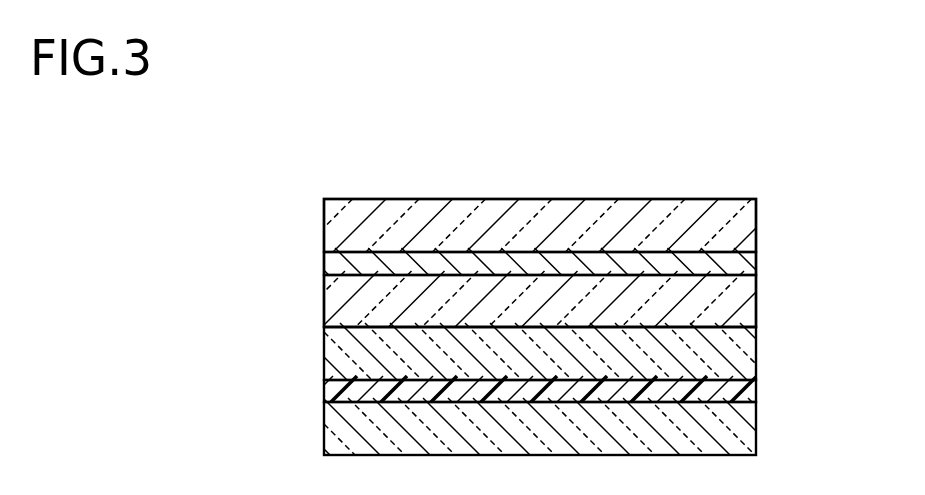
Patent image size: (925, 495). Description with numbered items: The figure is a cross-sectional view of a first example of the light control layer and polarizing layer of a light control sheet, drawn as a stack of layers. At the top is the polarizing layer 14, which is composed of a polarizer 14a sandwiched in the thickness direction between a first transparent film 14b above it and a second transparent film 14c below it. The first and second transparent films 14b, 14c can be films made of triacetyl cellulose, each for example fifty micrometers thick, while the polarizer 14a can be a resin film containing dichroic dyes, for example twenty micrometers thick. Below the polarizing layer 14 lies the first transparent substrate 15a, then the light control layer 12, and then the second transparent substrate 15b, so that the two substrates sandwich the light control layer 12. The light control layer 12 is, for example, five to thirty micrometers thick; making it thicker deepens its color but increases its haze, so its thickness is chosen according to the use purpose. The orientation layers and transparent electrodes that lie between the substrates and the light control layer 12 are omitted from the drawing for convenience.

The polarizing layer 14 is at (833, 200).
The first transparent film 14b is at (758, 218).
The polarizer 14a is at (758, 262).
The second transparent film 14c is at (758, 308).
The first transparent substrate 15a is at (758, 357).
The light control layer 12 is at (758, 393).
The second transparent substrate 15b is at (758, 425).